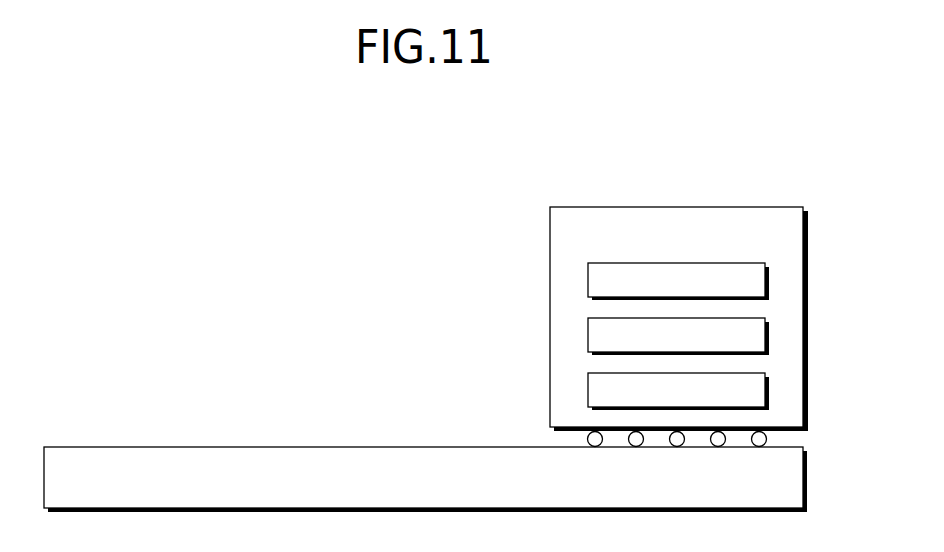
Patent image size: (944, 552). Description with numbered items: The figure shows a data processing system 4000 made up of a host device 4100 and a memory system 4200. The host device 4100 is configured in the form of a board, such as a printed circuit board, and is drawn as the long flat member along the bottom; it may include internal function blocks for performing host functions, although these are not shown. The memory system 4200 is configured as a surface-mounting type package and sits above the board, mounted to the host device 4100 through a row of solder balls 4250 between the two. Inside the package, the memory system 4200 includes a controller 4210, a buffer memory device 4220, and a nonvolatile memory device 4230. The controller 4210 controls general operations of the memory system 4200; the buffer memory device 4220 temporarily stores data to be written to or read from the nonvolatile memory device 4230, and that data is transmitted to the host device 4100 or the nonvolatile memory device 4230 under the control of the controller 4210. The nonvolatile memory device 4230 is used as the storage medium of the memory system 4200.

The data processing system 4000 is at (145, 172).
The host device 4100 is at (425, 479).
The memory system 4200 is at (679, 319).
The controller 4210 is at (678, 281).
The buffer memory device 4220 is at (678, 336).
The nonvolatile memory device 4230 is at (678, 391).
The solder balls 4250 is at (782, 440).